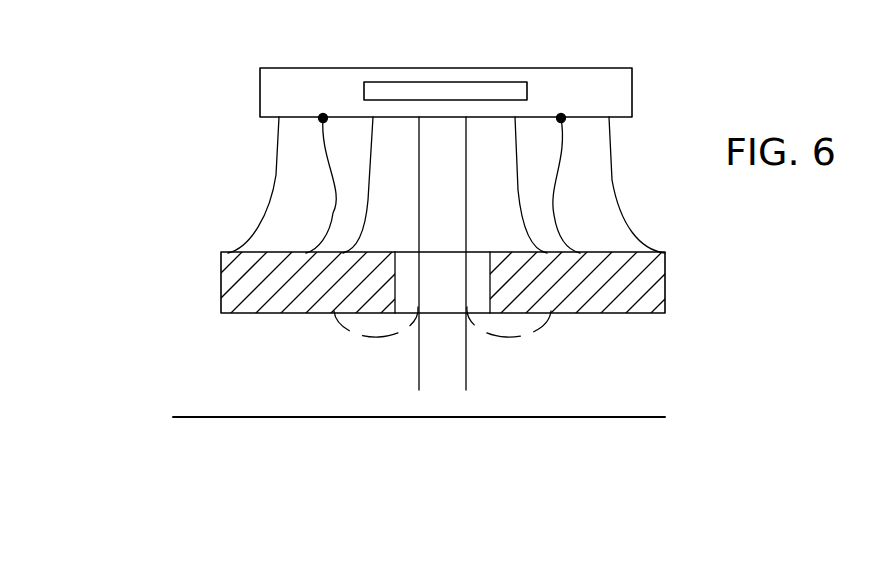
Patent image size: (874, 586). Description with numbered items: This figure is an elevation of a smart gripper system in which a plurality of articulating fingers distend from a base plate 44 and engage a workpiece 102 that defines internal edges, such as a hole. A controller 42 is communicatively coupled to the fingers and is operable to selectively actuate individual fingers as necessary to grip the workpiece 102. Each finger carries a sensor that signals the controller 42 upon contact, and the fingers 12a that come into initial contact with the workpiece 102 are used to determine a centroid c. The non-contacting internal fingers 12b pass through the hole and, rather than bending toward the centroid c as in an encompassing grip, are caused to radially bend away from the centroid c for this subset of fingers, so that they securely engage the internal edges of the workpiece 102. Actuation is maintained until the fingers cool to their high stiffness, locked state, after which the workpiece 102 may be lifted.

The controller 42 is at (400, 82).
The base plate 44 is at (260, 91).
The contacting fingers 12a is at (275, 173).
The non-contacting fingers 12b is at (419, 375).
The workpiece 102 is at (221, 302).
The centroid c is at (561, 117).